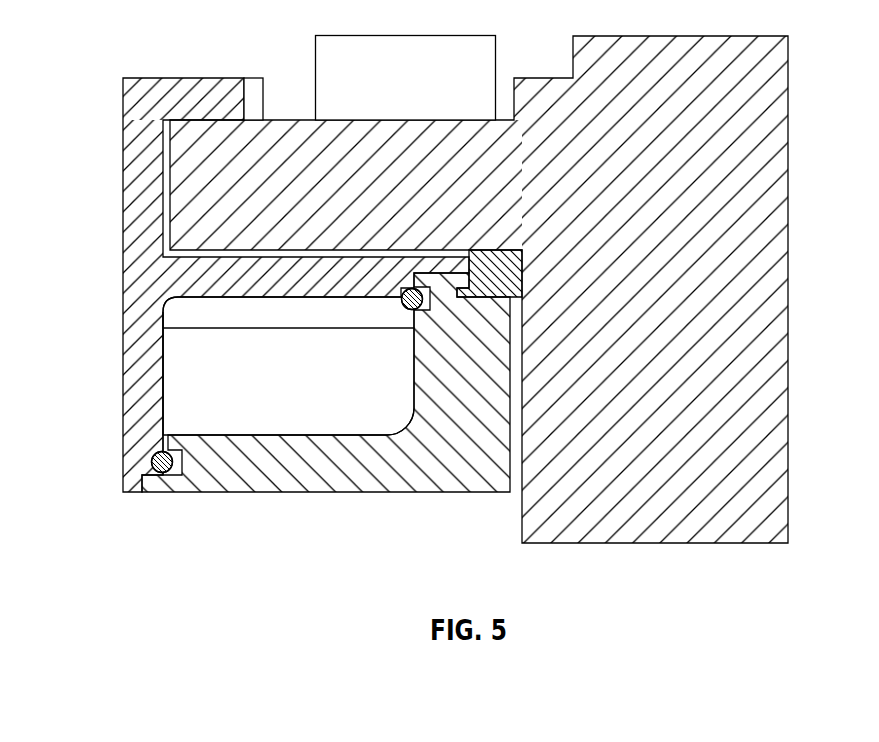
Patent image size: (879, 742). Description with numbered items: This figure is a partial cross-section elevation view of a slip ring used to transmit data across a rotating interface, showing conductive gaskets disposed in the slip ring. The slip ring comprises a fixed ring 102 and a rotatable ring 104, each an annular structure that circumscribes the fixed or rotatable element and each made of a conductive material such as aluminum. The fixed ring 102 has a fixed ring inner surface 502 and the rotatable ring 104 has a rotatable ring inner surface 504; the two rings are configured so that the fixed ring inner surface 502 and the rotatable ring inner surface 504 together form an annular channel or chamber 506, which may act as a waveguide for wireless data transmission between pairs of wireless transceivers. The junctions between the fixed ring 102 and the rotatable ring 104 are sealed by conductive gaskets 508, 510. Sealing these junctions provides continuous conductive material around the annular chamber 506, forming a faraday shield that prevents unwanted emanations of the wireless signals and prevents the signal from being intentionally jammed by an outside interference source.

The fixed ring 102 is at (492, 470).
The rotatable ring 104 is at (123, 172).
The fixed ring inner surface 502 is at (337, 437).
The rotatable ring inner surface 504 is at (153, 388).
The annular chamber 506 is at (281, 405).
The conductive gasket 508 is at (391, 306).
The conductive gasket 510 is at (462, 287).